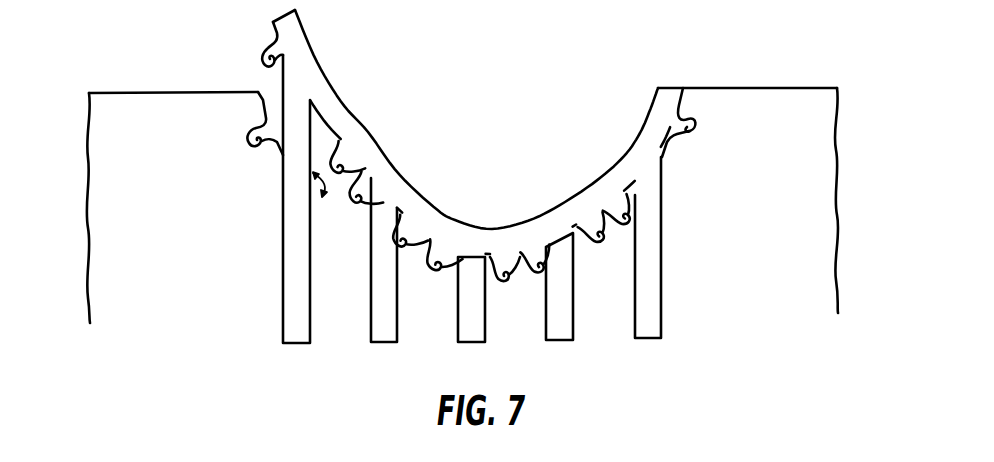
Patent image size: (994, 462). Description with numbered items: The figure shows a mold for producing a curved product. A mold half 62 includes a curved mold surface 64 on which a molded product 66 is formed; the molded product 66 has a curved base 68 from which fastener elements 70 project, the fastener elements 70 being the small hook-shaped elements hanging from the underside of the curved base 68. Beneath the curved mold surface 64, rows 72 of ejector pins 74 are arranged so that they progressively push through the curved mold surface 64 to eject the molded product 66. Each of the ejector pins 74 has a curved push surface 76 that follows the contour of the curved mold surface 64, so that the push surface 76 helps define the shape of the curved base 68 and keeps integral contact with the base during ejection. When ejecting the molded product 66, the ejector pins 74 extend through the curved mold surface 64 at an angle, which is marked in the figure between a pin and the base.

The mold half 62 is at (772, 117).
The curved mold surface 64 is at (260, 100).
The molded product 66 is at (463, 143).
The curved base 68 is at (672, 88).
The fastener elements 70 is at (272, 43).
The rows 72 is at (429, 203).
The ejector pins 74 is at (284, 240).
The curved push surface 76 is at (383, 188).